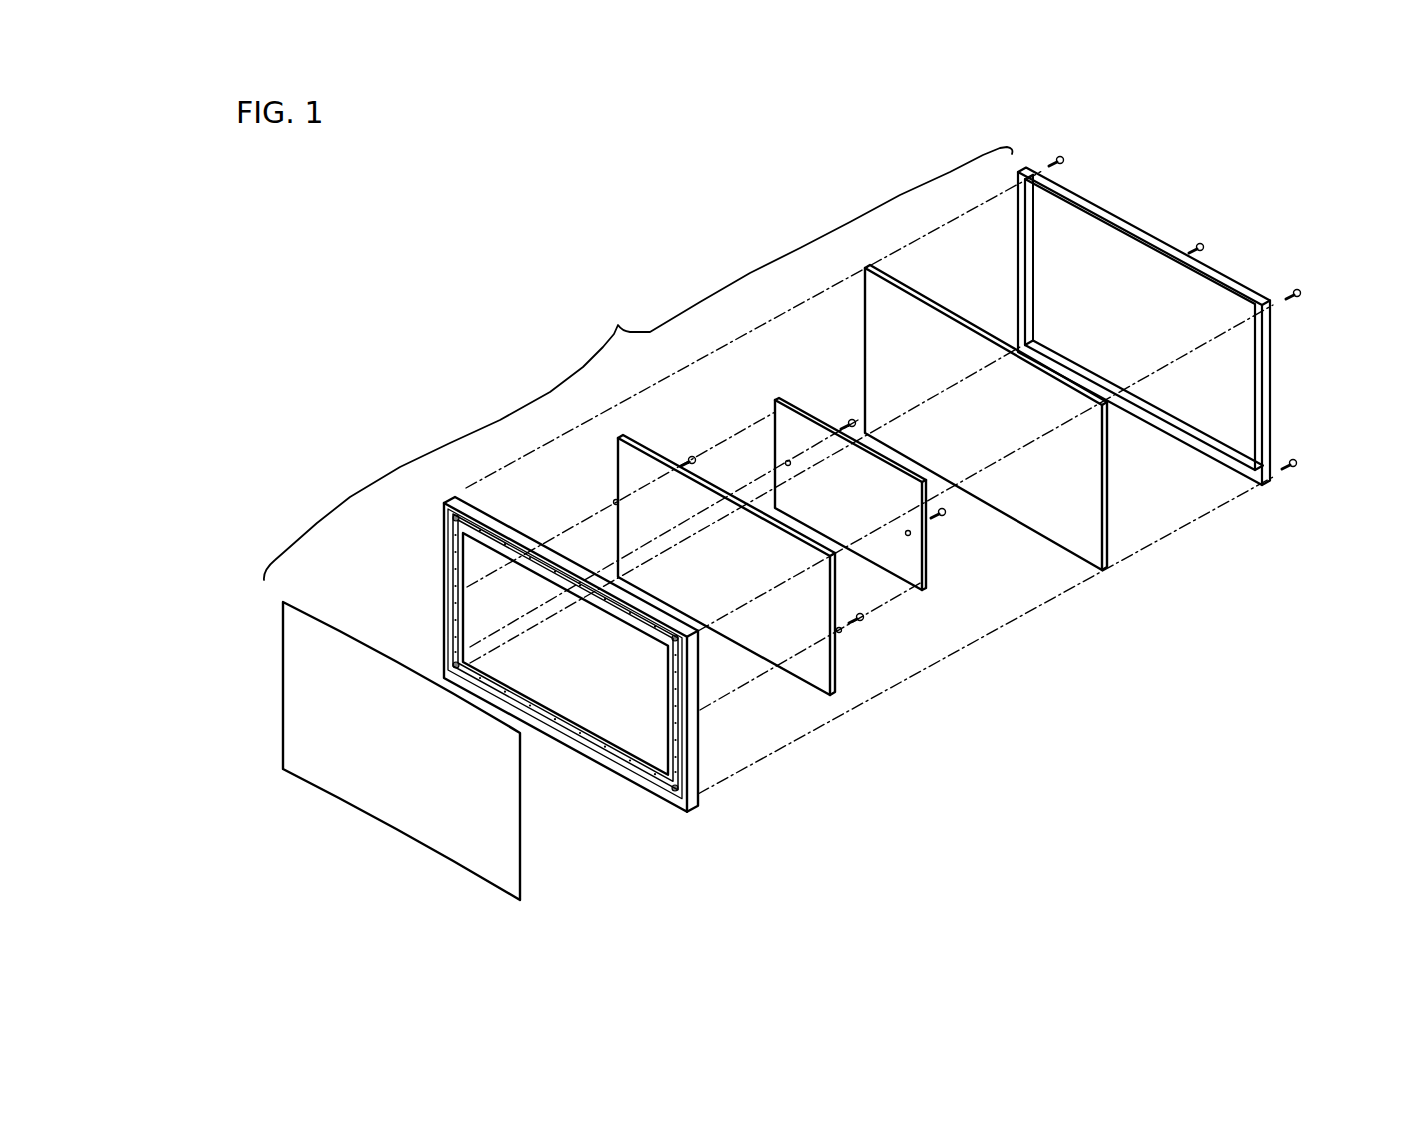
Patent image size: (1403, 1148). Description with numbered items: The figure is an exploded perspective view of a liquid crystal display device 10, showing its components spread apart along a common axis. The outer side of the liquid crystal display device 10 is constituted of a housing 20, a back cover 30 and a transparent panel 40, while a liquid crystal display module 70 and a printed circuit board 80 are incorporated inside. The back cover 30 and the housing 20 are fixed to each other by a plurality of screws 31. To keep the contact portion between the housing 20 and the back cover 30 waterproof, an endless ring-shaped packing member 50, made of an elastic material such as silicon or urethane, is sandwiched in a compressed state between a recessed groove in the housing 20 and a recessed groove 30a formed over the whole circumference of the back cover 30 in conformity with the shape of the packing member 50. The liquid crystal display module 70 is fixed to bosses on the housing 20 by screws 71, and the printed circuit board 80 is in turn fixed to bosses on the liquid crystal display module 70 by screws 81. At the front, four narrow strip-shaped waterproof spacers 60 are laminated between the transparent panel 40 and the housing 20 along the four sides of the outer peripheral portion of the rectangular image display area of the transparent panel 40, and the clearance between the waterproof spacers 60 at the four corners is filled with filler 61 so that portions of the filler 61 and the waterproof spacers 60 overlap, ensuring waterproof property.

The liquid crystal display device 10 is at (638, 363).
The housing 20 is at (700, 783).
The back cover 30 is at (1232, 460).
The recessed groove 30a is at (1018, 297).
The screws 31 is at (1066, 163).
The transparent panel 40 is at (483, 837).
The packing member 50 is at (1108, 490).
The waterproof spacers 60 is at (462, 587).
The filler 61 is at (462, 520).
The liquid crystal display module 70 is at (826, 655).
The screws 71 is at (697, 452).
The printed circuit board 80 is at (916, 550).
The screws 81 is at (850, 420).